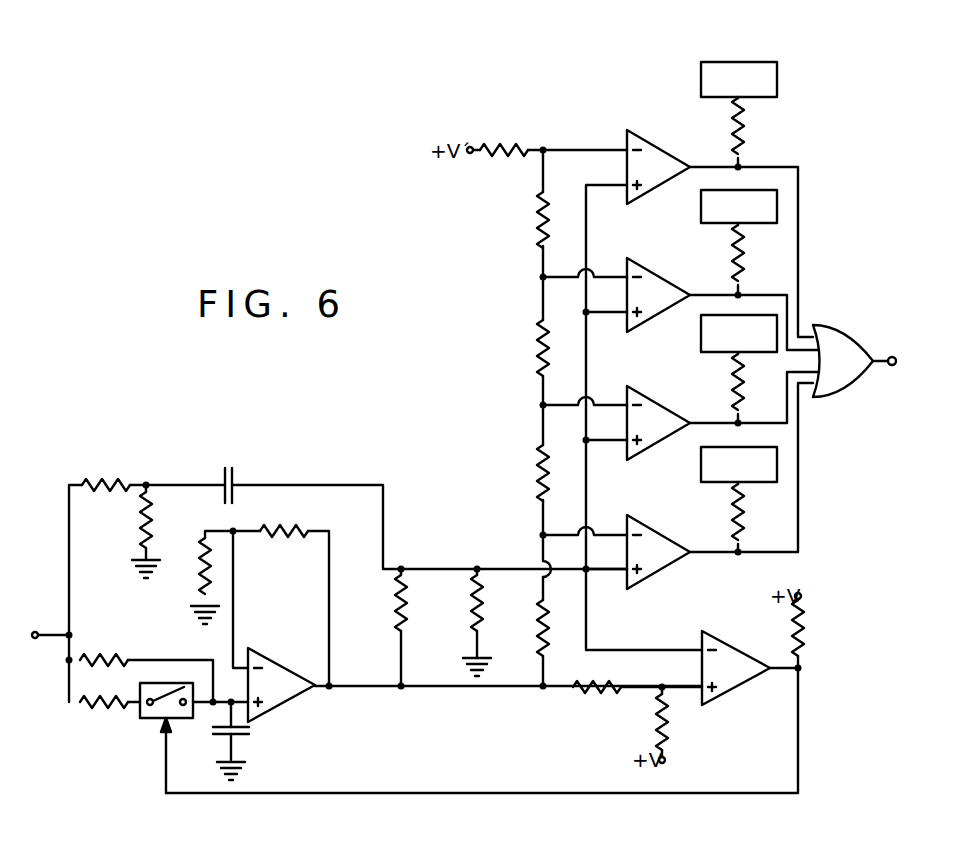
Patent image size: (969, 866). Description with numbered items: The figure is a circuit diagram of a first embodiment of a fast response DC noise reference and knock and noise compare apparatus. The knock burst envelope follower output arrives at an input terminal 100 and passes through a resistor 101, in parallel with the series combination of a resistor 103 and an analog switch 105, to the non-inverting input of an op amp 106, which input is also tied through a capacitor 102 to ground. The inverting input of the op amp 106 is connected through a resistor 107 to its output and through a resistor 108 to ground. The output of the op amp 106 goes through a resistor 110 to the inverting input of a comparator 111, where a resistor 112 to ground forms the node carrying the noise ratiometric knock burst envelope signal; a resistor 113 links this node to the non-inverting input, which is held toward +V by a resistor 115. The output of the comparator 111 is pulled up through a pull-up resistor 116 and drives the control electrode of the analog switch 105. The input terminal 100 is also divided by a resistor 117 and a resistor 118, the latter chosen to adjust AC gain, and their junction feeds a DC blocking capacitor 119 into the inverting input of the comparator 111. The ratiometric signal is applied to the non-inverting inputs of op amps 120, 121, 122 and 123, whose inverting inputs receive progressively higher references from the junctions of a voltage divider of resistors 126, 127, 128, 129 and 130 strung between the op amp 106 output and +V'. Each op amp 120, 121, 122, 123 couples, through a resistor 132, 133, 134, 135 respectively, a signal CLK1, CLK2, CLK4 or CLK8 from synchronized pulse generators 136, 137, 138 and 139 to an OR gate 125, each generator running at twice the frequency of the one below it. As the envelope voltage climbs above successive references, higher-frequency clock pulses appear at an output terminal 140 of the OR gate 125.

The input terminal 100 is at (37, 631).
The resistor 101 is at (95, 657).
The capacitor 102 is at (250, 735).
The resistor 103 is at (113, 706).
The analog switch 105 is at (158, 720).
The op amp 106 is at (287, 660).
The resistor 107 is at (290, 530).
The resistor 108 is at (202, 560).
The resistor 110 is at (402, 630).
The comparator 111 is at (750, 660).
The resistor 112 is at (478, 630).
The resistor 113 is at (605, 690).
The resistor 115 is at (665, 740).
The pull-up resistor 116 is at (803, 628).
The resistor 117 is at (115, 482).
The resistor 118 is at (146, 525).
The DC blocking capacitor 119 is at (236, 477).
The op amp 120 is at (665, 550).
The op amp 121 is at (665, 430).
The op amp 122 is at (665, 300).
The op amp 123 is at (665, 170).
The OR gate 125 is at (850, 382).
The resistor 126 is at (541, 640).
The resistor 127 is at (541, 480).
The resistor 128 is at (541, 352).
The resistor 129 is at (541, 220).
The resistor 130 is at (520, 148).
The resistor 132 is at (745, 530).
The resistor 133 is at (745, 398).
The resistor 134 is at (745, 258).
The resistor 135 is at (745, 130).
The synchronized pulse generator 136 is at (777, 480).
The synchronized pulse generator 137 is at (778, 333).
The synchronized pulse generator 138 is at (778, 205).
The synchronized pulse generator 139 is at (778, 85).
The output terminal 140 is at (890, 355).